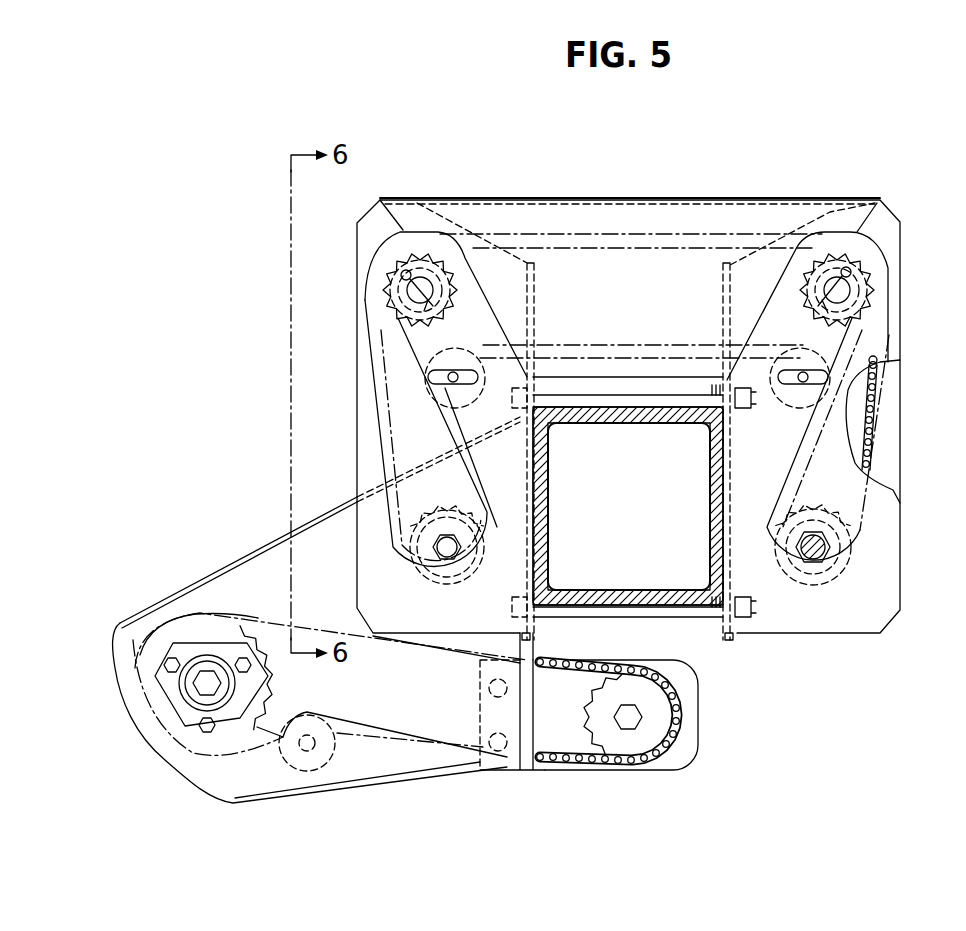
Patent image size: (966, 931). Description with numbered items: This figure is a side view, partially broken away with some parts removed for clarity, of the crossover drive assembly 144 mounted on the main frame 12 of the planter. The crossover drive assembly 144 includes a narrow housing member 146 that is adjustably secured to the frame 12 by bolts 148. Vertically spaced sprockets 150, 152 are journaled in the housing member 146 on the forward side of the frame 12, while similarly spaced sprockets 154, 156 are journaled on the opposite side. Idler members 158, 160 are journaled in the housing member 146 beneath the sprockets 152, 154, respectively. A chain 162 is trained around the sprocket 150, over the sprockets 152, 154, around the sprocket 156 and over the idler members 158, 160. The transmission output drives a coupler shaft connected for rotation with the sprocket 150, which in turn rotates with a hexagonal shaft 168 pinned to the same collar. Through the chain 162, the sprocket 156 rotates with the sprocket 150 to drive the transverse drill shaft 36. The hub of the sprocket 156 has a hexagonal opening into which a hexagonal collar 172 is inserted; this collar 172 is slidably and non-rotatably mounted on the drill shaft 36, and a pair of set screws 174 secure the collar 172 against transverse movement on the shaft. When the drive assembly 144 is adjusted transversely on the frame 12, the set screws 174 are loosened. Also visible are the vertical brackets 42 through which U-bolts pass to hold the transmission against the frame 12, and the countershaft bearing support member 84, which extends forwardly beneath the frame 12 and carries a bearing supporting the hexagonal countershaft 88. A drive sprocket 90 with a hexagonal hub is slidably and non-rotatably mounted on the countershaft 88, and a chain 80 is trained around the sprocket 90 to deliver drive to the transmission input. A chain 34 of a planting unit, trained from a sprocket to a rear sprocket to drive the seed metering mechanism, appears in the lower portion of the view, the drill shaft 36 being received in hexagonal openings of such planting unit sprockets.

The main frame 12 is at (708, 478).
The chain 34 is at (297, 815).
The drill or main planter drive shaft 36 is at (825, 560).
The vertical brackets 42 is at (527, 735).
The chain 80 is at (555, 763).
The countershaft bearing support member 84 is at (690, 712).
The countershaft 88 is at (633, 727).
The drive sprocket 90 is at (605, 697).
The crossover drive assembly 144 is at (483, 181).
The housing member 146 is at (618, 198).
The bolts 148 is at (600, 402).
The sprocket 150 is at (360, 497).
The sprocket 152 is at (383, 297).
The sprocket 154 is at (866, 290).
The sprocket 156 is at (852, 530).
The slot 158 is at (440, 377).
The idler member 160 is at (822, 380).
The chain 162 is at (880, 397).
The hexagonal shaft 168 is at (447, 550).
The hexagonal collar 172 is at (812, 560).
The set screws 174 is at (806, 535).